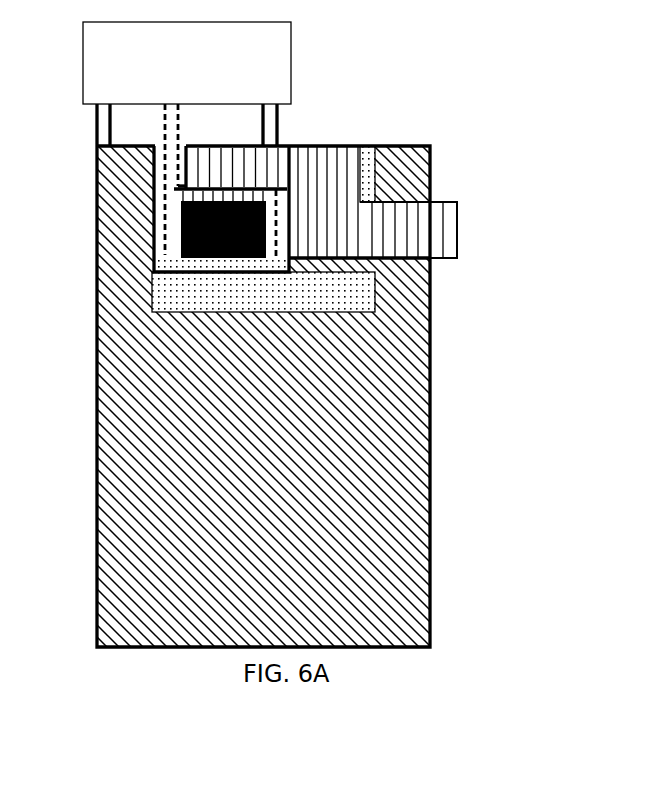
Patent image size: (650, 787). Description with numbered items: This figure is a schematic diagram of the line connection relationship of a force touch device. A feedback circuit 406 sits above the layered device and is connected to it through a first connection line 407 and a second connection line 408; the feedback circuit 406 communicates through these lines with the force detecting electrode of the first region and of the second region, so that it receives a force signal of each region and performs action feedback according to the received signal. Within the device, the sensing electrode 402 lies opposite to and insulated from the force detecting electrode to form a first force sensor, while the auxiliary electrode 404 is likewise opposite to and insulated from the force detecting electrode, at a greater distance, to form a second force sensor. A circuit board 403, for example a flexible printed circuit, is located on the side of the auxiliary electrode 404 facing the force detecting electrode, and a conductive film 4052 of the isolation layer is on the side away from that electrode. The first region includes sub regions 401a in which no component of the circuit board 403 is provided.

The feedback circuit 406 is at (291, 64).
The first connection line 407 is at (97, 118).
The second connection line 408 is at (183, 133).
The sub region 401a is at (184, 166).
The sensing electrode 402 is at (402, 535).
The circuit board 403 is at (443, 230).
The auxiliary electrode 404 is at (250, 260).
The conductive film 4052 is at (347, 299).